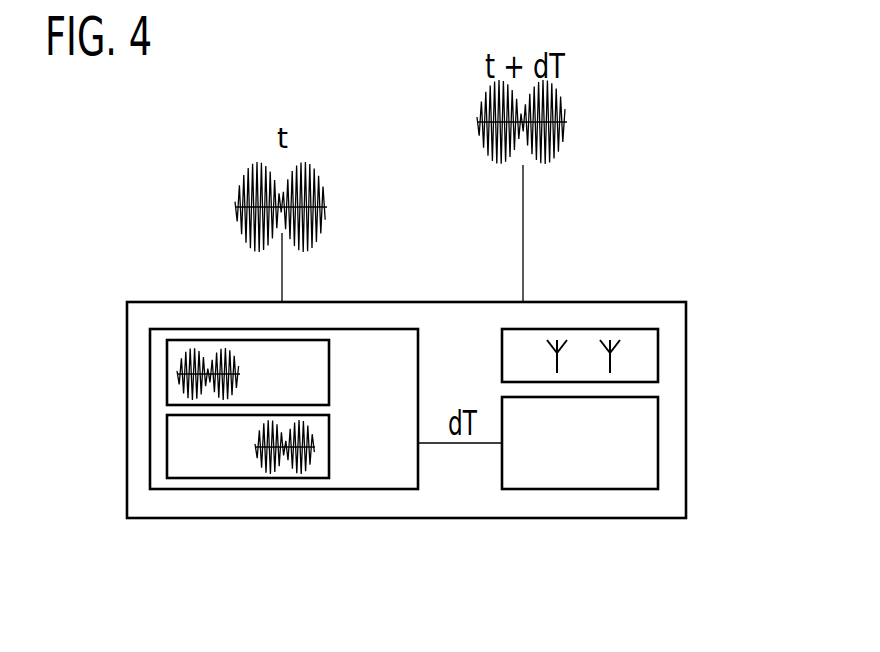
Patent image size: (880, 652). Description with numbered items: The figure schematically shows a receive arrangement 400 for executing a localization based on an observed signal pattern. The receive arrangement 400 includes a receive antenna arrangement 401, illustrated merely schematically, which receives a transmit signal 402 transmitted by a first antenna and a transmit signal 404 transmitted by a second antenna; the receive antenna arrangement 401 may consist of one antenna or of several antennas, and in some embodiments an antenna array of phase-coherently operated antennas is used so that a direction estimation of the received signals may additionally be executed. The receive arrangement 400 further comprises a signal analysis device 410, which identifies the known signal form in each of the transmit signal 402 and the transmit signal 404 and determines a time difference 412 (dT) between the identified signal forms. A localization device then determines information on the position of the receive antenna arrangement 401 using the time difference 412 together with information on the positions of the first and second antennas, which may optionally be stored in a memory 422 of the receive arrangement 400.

The receive arrangement 400 is at (763, 447).
The receive antenna arrangement 401 is at (250, 489).
The transmit signal 402 is at (185, 348).
The transmit signal 404 is at (167, 450).
The signal analysis device 410 is at (150, 370).
The time difference 412 is at (549, 355).
The memory 422 is at (658, 357).